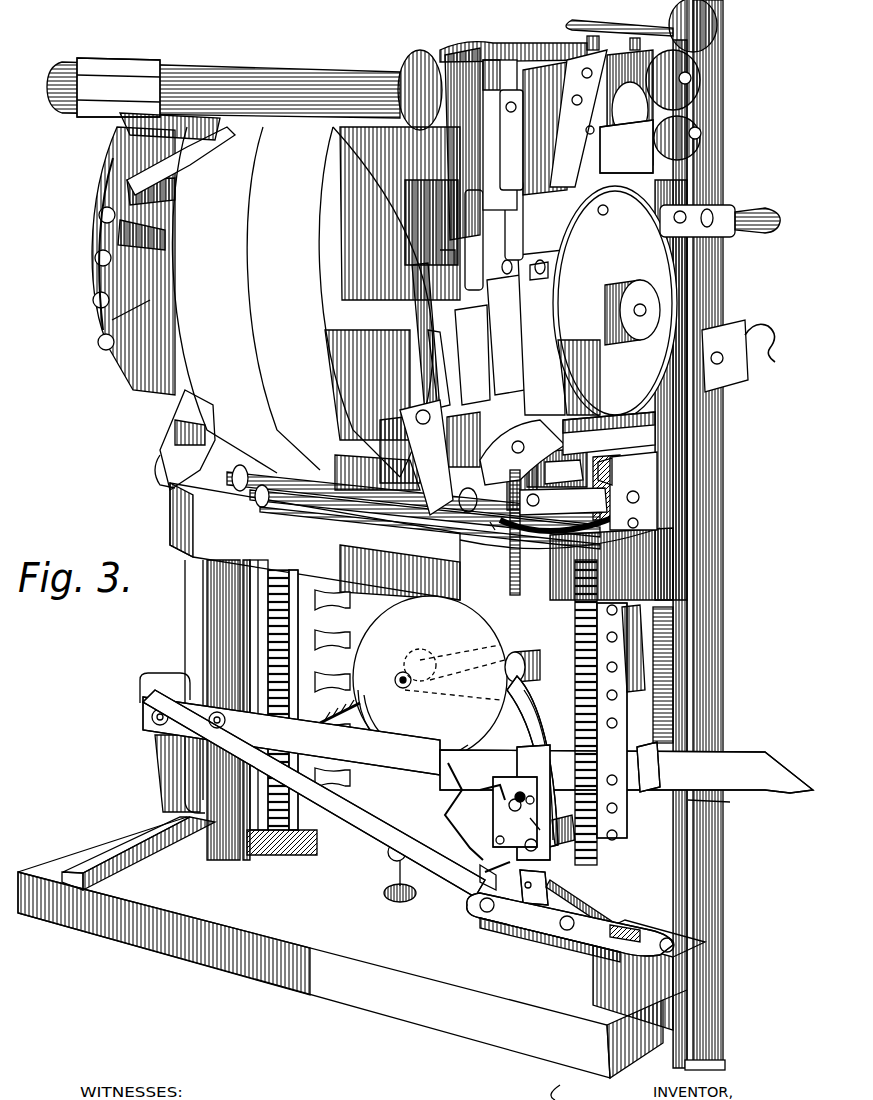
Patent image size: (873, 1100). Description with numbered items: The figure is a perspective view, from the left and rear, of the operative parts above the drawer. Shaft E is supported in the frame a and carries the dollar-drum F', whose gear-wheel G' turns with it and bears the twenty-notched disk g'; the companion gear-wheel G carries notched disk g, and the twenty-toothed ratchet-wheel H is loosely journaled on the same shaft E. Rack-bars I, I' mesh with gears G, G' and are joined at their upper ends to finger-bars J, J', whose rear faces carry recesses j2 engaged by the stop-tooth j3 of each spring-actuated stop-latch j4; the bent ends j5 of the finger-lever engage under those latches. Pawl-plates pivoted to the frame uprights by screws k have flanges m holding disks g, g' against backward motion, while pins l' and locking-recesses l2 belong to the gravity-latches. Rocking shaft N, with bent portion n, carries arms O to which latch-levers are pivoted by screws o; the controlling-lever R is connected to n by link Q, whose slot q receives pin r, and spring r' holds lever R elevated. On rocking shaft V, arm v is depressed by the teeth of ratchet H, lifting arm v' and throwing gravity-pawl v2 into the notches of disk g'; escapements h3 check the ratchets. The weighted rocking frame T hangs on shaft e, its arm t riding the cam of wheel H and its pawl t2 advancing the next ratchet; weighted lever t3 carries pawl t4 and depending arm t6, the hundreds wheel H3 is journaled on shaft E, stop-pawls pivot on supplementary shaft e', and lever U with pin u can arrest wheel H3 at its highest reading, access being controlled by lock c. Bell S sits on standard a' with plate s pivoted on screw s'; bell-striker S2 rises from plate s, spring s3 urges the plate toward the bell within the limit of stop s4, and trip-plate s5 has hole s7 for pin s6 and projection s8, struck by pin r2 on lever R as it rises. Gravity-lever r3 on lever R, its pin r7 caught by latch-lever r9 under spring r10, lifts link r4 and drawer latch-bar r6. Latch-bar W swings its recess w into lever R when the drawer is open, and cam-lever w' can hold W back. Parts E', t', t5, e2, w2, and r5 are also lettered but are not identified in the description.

The weighted rocking frame T is at (240, 80).
The dollar-drum F' is at (307, 260).
The frame a is at (181, 161).
The dependent arm t is at (98, 243).
The escapements h3 is at (130, 198).
The notched disk g is at (141, 239).
The ratchet-wheel H is at (100, 292).
The lock c is at (119, 301).
The gear-wheel G is at (170, 440).
The arm v is at (154, 473).
The arm O is at (250, 510).
The rocking shaft N is at (322, 512).
The drum disc E' is at (390, 308).
The notched disk g' is at (413, 338).
The gear-wheel G' is at (416, 356).
The pawl t2 is at (438, 254).
The depending arm t6 is at (503, 250).
The slide bar t' is at (500, 138).
The weighted lever t3 is at (550, 150).
The screws o is at (594, 122).
The spring-held pawl t4 is at (607, 148).
The bracket t5 is at (620, 140).
The upper disc e2 is at (707, 27).
The shaft e is at (692, 80).
The supplementary shaft e' is at (704, 138).
The shaft E is at (615, 303).
The ratchet-wheel H3 is at (548, 270).
The screw w2 is at (608, 210).
The pivoted lever U is at (757, 233).
The pin u is at (685, 221).
The latch-bar W is at (697, 323).
The cam-lever w' is at (763, 345).
The screws k is at (540, 443).
The arm v' is at (426, 457).
The gravity-pawl v2 is at (429, 423).
The flanges m is at (505, 529).
The locking-recesses l2 is at (564, 472).
The pins l' is at (563, 501).
The bent portion n is at (553, 530).
The rocking shaft V is at (490, 525).
The ends of finger-lever j5 is at (609, 433).
The stop-tooth j3 is at (630, 483).
The stop-latch j4 is at (610, 468).
The link r4 is at (395, 872).
The rack-bar I is at (268, 712).
The finger-bar J' is at (343, 640).
The finger-bar J is at (343, 755).
The bell S is at (430, 680).
The spring r10 is at (341, 719).
The latch-lever r9 is at (440, 780).
The lever bar r5 is at (291, 736).
The gravity-lever r3 is at (365, 800).
The controlling-lever R is at (775, 750).
The locking-recess w is at (721, 807).
The bell-striker S2 is at (533, 660).
The standard a' is at (541, 762).
The link Q is at (594, 712).
The recesses j2 is at (612, 840).
The slot q is at (633, 794).
The spring r' is at (665, 688).
The pin r is at (630, 692).
The plate s is at (520, 802).
The latch-bar r6 is at (485, 828).
The pin r2 is at (491, 790).
The gravity trip-plate s5 is at (533, 806).
The hole s7 is at (529, 823).
The projecting part s8 is at (493, 846).
The screw s' is at (529, 850).
The pin r7 is at (497, 863).
The stop s4 is at (534, 887).
The spring s3 is at (589, 913).
The pin s6 is at (490, 878).
The rack-bar I' is at (570, 927).